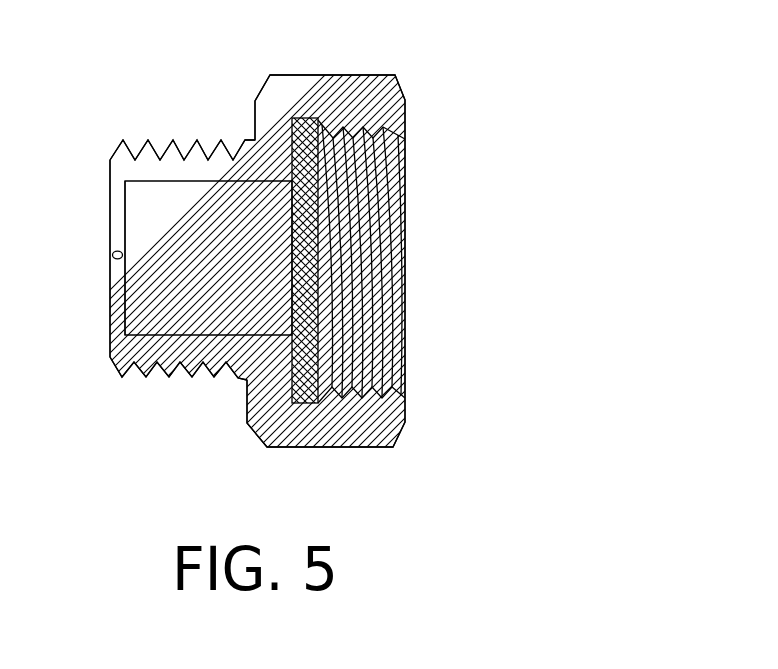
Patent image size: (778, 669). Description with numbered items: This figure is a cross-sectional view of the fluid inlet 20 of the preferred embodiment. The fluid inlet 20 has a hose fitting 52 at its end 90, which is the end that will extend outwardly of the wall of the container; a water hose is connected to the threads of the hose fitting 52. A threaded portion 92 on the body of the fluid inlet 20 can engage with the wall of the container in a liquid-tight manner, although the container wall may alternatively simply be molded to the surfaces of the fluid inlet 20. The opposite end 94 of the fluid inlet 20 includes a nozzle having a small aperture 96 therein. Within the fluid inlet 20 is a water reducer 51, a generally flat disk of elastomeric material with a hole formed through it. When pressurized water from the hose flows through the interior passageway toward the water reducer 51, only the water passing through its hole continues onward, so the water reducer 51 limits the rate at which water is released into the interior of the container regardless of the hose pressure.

The fluid inlet 20 is at (347, 56).
The end 90 is at (395, 77).
The threaded portion 92 is at (182, 150).
The end 94 is at (110, 217).
The small aperture 96 is at (108, 295).
The water reducer 51 is at (292, 212).
The hose fitting 52 is at (383, 146).